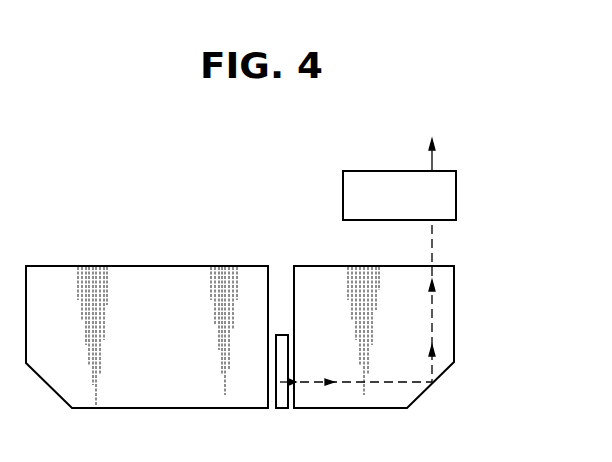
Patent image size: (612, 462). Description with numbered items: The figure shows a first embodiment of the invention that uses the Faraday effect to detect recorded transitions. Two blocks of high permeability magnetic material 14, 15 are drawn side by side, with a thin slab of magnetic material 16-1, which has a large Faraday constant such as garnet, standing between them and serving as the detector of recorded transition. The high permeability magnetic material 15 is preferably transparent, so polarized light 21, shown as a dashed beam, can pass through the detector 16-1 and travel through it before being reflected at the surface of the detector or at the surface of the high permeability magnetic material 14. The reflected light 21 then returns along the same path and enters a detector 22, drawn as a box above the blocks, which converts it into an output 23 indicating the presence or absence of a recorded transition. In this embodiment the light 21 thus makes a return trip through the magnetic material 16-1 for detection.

The high permeability magnetic material 14 is at (184, 282).
The high permeability magnetic material 15 is at (312, 282).
The detector of recorded transition 16-1 is at (283, 408).
The polarized light 21 is at (433, 256).
The detector 22 is at (456, 198).
The output 23 is at (433, 160).